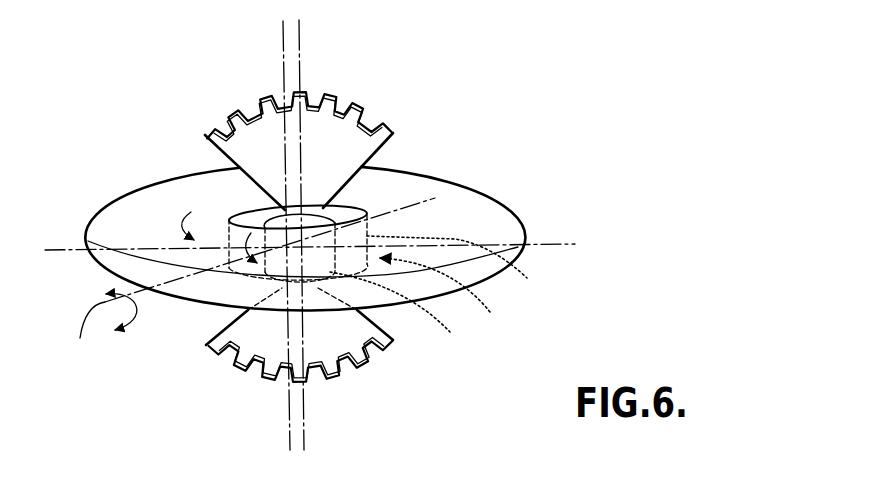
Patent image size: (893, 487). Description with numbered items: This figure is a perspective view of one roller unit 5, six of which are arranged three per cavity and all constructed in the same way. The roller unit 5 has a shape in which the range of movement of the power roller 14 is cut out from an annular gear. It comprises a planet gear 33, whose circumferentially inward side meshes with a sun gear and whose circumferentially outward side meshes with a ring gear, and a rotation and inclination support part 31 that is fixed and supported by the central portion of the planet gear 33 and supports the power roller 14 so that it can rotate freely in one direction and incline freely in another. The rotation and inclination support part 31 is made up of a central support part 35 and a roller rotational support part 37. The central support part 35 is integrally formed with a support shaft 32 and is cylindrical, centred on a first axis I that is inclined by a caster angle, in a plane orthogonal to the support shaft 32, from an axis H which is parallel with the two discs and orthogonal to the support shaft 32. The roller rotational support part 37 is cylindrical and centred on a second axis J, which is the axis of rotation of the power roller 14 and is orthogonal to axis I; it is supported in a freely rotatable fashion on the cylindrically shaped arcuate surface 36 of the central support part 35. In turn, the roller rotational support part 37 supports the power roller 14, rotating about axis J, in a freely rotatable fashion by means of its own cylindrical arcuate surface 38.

The roller unit 5 is at (325, 82).
The power roller 14 is at (462, 222).
The rotation and inclination support part 31 is at (449, 302).
The support shaft 32 is at (299, 376).
The planet gear 33 is at (333, 97).
The central support part 35 is at (338, 213).
The cylindrically shaped arcuate surface 36 is at (399, 317).
The roller rotational support part 37 is at (244, 217).
The cylindrical arcuate surface 38 is at (463, 276).
The second axis J is at (283, 78).
The axis parallel with the discs H is at (540, 243).
The first axis I is at (253, 279).